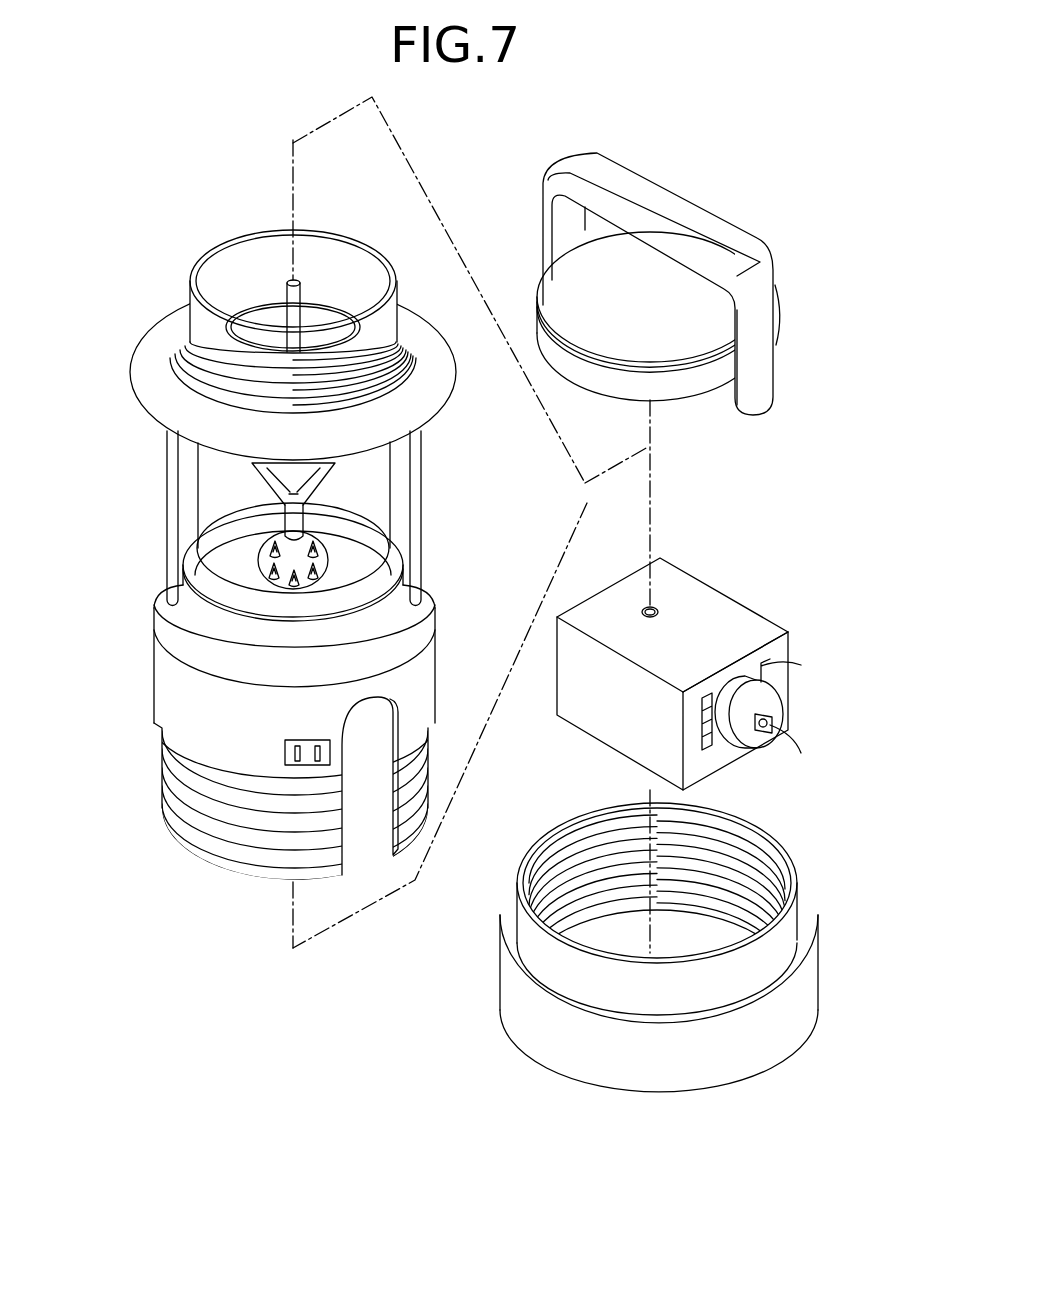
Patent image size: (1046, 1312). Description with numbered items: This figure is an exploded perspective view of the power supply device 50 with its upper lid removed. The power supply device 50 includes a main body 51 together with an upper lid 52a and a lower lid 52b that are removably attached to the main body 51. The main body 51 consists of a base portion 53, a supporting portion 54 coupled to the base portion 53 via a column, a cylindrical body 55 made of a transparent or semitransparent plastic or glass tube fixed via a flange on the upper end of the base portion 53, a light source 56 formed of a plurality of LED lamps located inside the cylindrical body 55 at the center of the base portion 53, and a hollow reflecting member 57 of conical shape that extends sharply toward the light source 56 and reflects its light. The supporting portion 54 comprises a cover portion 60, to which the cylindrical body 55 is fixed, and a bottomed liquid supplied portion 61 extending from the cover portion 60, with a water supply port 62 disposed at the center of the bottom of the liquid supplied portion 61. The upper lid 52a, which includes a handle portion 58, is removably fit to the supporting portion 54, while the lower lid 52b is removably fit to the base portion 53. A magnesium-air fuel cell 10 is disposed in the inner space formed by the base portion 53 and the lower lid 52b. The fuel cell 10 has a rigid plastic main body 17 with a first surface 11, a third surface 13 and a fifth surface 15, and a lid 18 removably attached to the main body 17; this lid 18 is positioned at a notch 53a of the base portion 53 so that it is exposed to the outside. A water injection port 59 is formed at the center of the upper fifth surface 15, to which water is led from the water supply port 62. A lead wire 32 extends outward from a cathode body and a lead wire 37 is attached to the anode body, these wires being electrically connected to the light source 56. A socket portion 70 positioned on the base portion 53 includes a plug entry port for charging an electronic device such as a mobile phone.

The magnesium-air fuel cell 10 is at (689, 574).
The first surface 11 is at (780, 650).
The third surface 13 is at (593, 708).
The fifth surface 15 is at (667, 575).
The main body 17 is at (720, 615).
The lid 18 is at (751, 735).
The lead wire 32 is at (797, 666).
The lead wire 37 is at (785, 748).
The power supply device 50 is at (740, 152).
The main body 51 is at (120, 243).
The upper lid 52a is at (704, 384).
The lower lid 52b is at (737, 1047).
The base portion 53 is at (235, 747).
The notch 53a is at (417, 737).
The supporting portion 54 is at (217, 196).
The cylindrical body 55 is at (378, 499).
The light source 56 is at (318, 558).
The reflecting member 57 is at (315, 482).
The handle portion 58 is at (664, 208).
The water injection port 59 is at (654, 608).
The cover portion 60 is at (158, 338).
The liquid supplied portion 61 is at (218, 272).
The water supply port 62 is at (322, 307).
The socket portion 70 is at (285, 752).